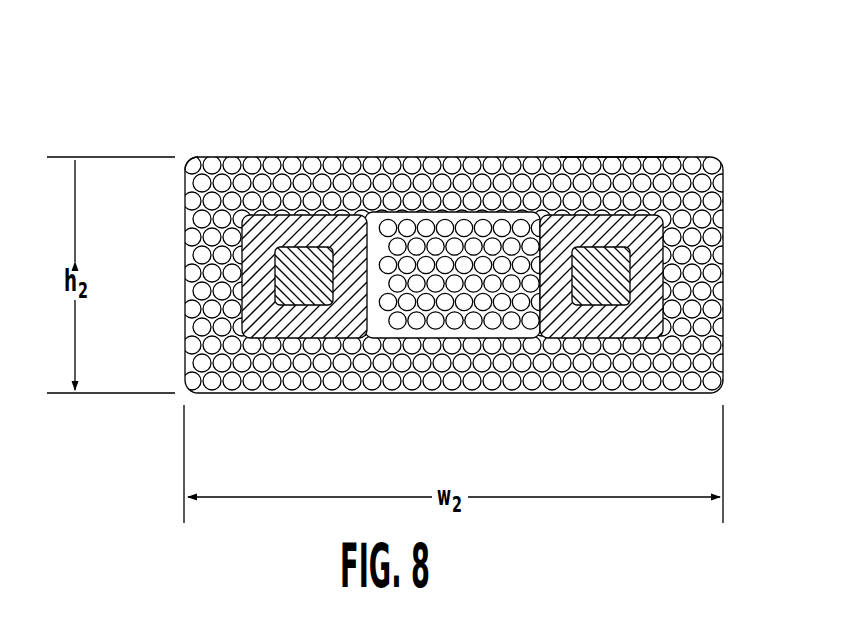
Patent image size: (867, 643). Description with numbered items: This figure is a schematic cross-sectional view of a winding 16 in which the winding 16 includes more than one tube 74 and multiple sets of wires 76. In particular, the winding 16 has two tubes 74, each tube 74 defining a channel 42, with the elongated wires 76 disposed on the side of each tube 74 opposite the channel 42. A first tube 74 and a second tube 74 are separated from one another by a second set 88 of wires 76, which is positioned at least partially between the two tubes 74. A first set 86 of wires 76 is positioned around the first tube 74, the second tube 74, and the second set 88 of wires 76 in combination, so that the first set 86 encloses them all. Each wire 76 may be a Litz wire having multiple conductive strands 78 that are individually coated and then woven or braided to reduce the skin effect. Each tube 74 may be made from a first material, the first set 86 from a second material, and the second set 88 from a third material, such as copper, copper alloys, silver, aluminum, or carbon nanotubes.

The winding 16 is at (686, 82).
The channel 42 is at (333, 242).
The tube 74 is at (305, 206).
The elongated wires 76 is at (228, 149).
The conductive strands 78 is at (193, 162).
The first set of wires 86 is at (584, 167).
The second set of wires 88 is at (458, 205).